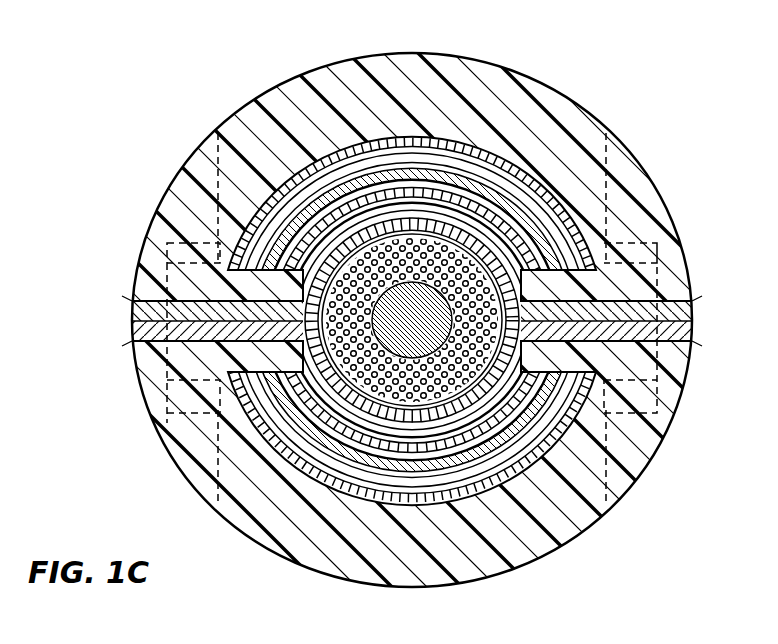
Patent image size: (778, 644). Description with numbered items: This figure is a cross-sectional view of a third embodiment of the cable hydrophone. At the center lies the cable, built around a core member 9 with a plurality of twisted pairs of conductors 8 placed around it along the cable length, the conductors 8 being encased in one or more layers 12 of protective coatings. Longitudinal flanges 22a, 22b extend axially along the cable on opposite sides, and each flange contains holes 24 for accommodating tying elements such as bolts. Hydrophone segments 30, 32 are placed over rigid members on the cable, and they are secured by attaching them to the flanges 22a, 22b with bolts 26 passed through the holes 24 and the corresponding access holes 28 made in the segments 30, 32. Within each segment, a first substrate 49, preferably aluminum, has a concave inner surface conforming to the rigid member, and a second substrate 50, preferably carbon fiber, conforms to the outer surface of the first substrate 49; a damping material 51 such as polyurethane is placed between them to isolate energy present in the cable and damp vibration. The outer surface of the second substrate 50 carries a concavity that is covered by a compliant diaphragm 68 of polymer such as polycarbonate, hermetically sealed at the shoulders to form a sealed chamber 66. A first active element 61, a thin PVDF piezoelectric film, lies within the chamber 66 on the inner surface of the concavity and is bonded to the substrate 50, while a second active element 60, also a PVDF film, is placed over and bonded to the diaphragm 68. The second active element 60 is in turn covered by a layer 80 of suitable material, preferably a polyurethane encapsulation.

The twisted pairs of conductors 8 is at (420, 269).
The core member 9 is at (420, 337).
The layers of protective coatings 12 is at (318, 404).
The longitudinal flange 22a is at (133, 303).
The longitudinal flange 22b is at (133, 340).
The holes 24 is at (647, 318).
The bolts 26 is at (180, 242).
The access holes 28 is at (655, 362).
The hydrophone segment 30 is at (393, 82).
The hydrophone segment 32 is at (367, 587).
The first substrate 49 is at (437, 190).
The second substrate 50 is at (548, 232).
The damping material 51 is at (378, 200).
The second active element 60 is at (245, 140).
The first active element 61 is at (517, 193).
The sealed chamber 66 is at (345, 190).
The compliant diaphragm 68 is at (574, 212).
The layer 80 is at (510, 130).